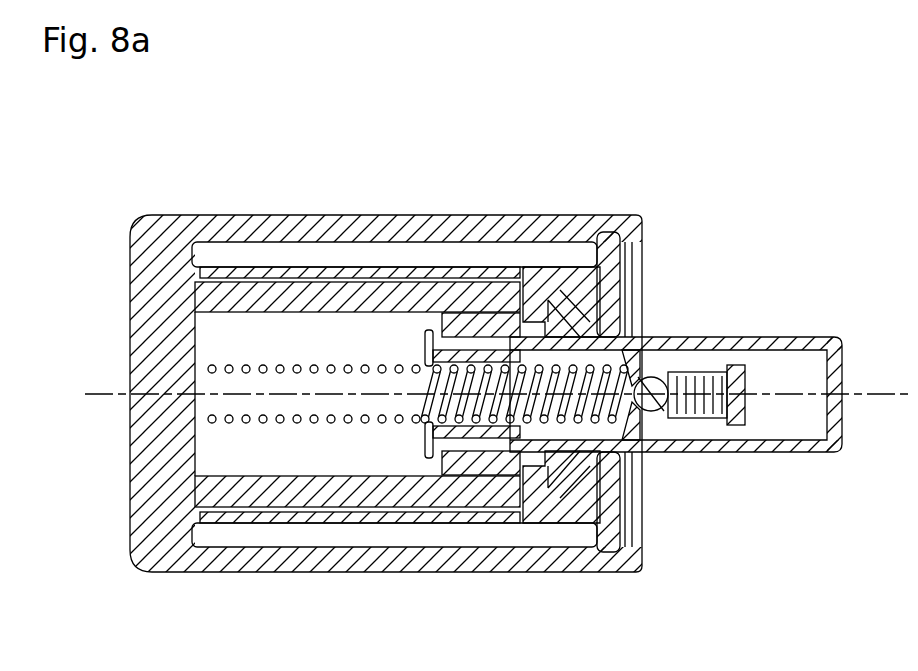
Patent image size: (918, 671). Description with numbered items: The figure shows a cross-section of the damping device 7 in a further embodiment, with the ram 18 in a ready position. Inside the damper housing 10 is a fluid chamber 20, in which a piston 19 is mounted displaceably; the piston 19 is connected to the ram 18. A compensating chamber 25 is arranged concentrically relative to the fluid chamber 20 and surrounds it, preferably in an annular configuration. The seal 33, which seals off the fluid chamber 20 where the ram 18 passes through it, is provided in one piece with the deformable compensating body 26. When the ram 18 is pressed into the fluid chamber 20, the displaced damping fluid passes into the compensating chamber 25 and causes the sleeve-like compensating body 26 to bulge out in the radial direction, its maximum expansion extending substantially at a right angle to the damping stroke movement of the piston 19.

The damping device 7 is at (704, 145).
The damper housing 10 is at (229, 560).
The ram 18 is at (775, 337).
The piston 19 is at (500, 325).
The fluid chamber 20 is at (245, 330).
The compensating chamber 25 is at (345, 258).
The compensating body 26 is at (420, 272).
The seal 33 is at (565, 317).